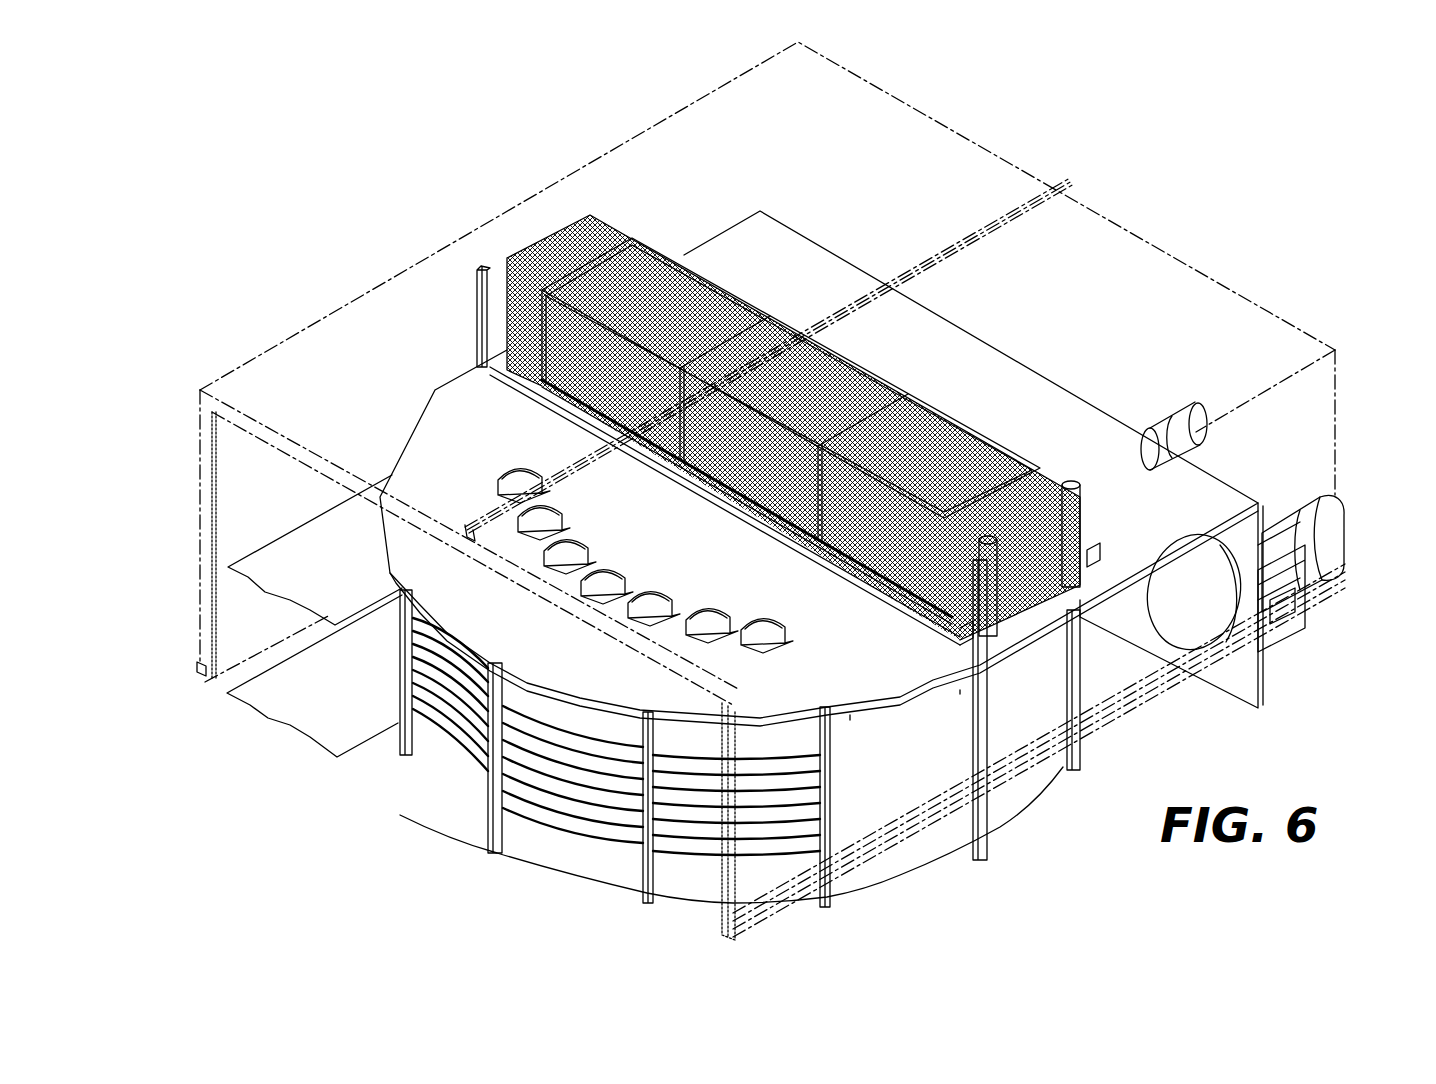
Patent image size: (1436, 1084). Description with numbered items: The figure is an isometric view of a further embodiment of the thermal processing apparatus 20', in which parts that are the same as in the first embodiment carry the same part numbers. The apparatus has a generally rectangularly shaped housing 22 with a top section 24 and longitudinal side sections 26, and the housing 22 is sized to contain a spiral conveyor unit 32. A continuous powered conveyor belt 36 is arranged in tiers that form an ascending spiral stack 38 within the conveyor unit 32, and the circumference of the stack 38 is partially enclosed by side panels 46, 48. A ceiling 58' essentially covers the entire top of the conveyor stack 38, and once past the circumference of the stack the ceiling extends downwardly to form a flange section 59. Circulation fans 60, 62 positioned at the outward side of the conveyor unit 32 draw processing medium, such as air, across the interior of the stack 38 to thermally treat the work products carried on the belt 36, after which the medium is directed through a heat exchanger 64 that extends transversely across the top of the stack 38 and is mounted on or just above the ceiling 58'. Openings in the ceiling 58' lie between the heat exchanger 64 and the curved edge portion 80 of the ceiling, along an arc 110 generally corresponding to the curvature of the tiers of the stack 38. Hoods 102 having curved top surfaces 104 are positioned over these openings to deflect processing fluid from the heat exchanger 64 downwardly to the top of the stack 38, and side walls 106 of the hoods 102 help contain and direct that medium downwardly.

The thermal processing apparatus 20' is at (369, 137).
The top section 24 is at (736, 100).
The housing 22 is at (309, 328).
The longitudinal side sections 26 is at (1300, 421).
The continuous powered conveyor belt 36 is at (277, 700).
The ceiling 58' is at (819, 468).
The heat exchanger 64 is at (552, 242).
The arc 110 is at (498, 460).
The circulation fan 62 is at (1194, 420).
The circulation fan 60 is at (1336, 505).
The flange section 59 is at (1252, 647).
The side panel 48 is at (1027, 780).
The hoods 102 is at (530, 536).
The ascending spiral stack 38 is at (472, 737).
The curved outer edge 80 is at (573, 697).
The spiral conveyor unit 32 is at (606, 890).
The side panel 46 is at (913, 847).
The side walls 106 is at (753, 640).
The curved top surfaces 104 is at (757, 640).